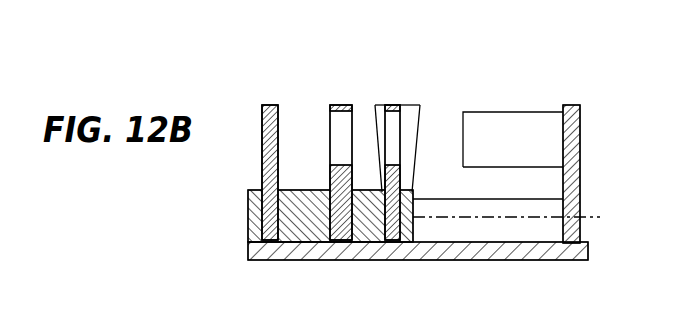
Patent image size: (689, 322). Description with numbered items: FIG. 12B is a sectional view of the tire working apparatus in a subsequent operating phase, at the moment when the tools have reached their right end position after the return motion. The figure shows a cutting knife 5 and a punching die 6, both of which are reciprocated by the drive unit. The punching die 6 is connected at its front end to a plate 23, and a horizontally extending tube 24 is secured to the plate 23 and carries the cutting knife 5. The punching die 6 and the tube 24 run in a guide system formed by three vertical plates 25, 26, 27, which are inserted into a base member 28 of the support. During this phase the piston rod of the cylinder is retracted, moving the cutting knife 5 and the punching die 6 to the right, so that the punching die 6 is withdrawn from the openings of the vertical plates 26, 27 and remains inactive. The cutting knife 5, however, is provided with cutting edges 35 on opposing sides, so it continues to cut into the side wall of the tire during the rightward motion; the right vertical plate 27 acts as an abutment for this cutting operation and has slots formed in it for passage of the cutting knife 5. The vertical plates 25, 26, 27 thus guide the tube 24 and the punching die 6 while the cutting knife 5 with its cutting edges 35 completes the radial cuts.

The cutting knife 5 is at (377, 127).
The punching die 6 is at (505, 127).
The plate 23 is at (572, 105).
The tube 24 is at (500, 220).
The vertical plate 25 is at (268, 92).
The vertical plate 26 is at (336, 92).
The right vertical plate 27 is at (392, 92).
The base member 28 is at (307, 234).
The cutting edge 35 is at (420, 127).